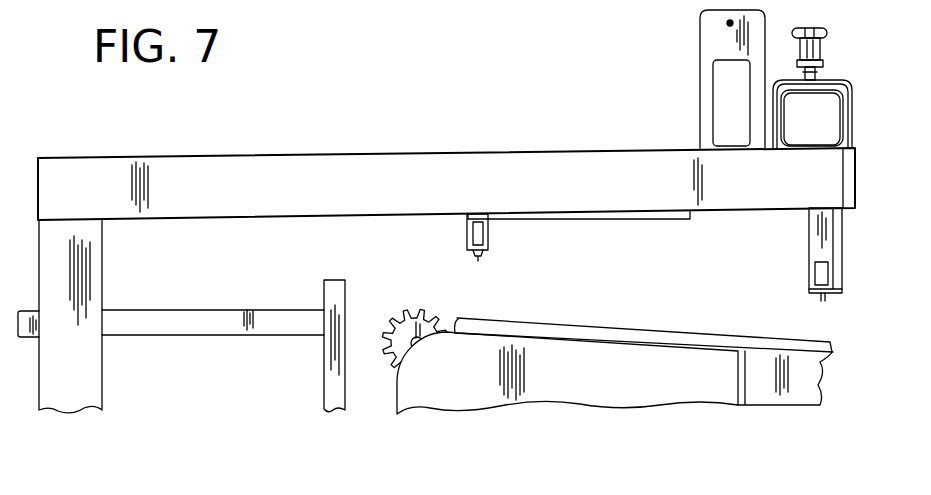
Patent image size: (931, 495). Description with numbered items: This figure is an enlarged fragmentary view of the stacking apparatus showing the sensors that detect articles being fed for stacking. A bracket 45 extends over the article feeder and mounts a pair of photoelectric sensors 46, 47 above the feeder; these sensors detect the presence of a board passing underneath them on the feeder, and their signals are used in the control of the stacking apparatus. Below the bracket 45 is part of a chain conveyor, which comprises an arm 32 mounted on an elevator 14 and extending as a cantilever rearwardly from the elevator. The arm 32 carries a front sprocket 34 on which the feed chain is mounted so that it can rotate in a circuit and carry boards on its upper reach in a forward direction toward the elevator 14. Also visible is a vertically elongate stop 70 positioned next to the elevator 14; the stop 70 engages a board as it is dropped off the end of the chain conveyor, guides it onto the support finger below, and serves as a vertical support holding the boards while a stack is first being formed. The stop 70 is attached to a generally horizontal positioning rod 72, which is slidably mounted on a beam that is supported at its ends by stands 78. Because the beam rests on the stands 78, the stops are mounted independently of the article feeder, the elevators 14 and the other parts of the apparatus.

The bracket 45 is at (415, 152).
The photoelectric sensor 47 is at (478, 261).
The photoelectric sensor 46 is at (823, 301).
The stand 78 is at (90, 367).
The positioning rod 72 is at (217, 315).
The stop 70 is at (333, 290).
The front sprocket 34 is at (385, 327).
The elevator 14 is at (563, 367).
The arm 32 is at (800, 388).